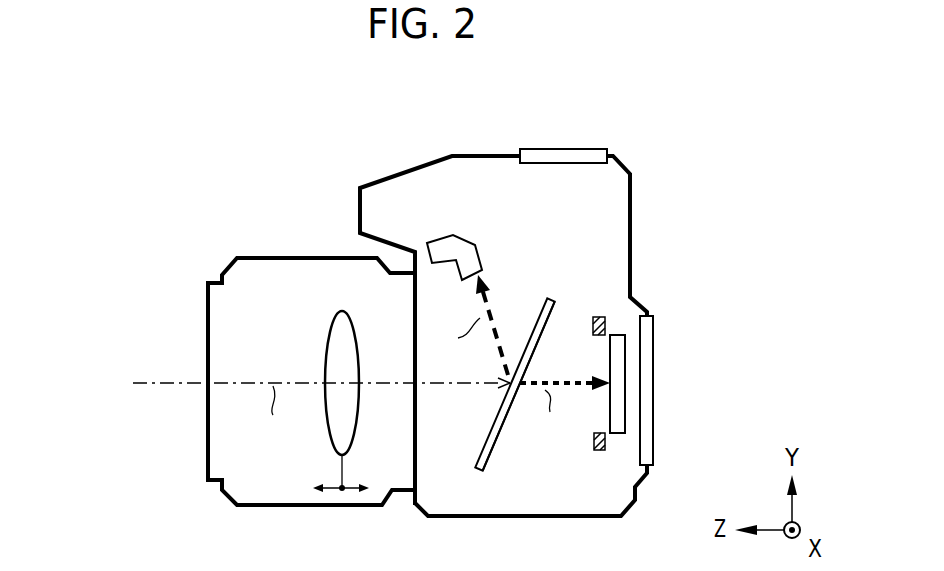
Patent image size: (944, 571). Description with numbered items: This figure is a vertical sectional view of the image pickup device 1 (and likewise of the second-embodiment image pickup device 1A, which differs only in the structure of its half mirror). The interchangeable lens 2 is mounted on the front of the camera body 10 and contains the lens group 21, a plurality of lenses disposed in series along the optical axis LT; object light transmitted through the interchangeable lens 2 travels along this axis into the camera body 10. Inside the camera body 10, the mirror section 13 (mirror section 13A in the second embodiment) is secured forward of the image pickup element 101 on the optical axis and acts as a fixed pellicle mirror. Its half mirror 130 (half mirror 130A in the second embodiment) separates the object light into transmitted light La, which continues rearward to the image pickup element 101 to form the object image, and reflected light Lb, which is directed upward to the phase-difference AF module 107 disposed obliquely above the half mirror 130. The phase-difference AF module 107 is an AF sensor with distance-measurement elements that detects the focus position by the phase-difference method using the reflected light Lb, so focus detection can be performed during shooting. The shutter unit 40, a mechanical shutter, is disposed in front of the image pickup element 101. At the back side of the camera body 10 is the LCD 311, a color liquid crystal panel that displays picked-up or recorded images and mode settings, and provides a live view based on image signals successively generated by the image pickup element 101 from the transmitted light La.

The image pickup device 1 is at (460, 80).
The image pickup device 1A is at (431, 303).
The interchangeable lens 2 is at (298, 245).
The camera body 10 is at (403, 152).
The mirror section 13 is at (470, 445).
The mirror section 13A is at (514, 384).
The lens group 21 is at (320, 320).
The shutter unit 40 is at (598, 316).
The image pickup element 101 is at (617, 334).
The phase-difference AF module 107 is at (480, 256).
The half mirror 130 is at (495, 438).
The half mirror 130A is at (519, 386).
The LCD 311 is at (650, 390).